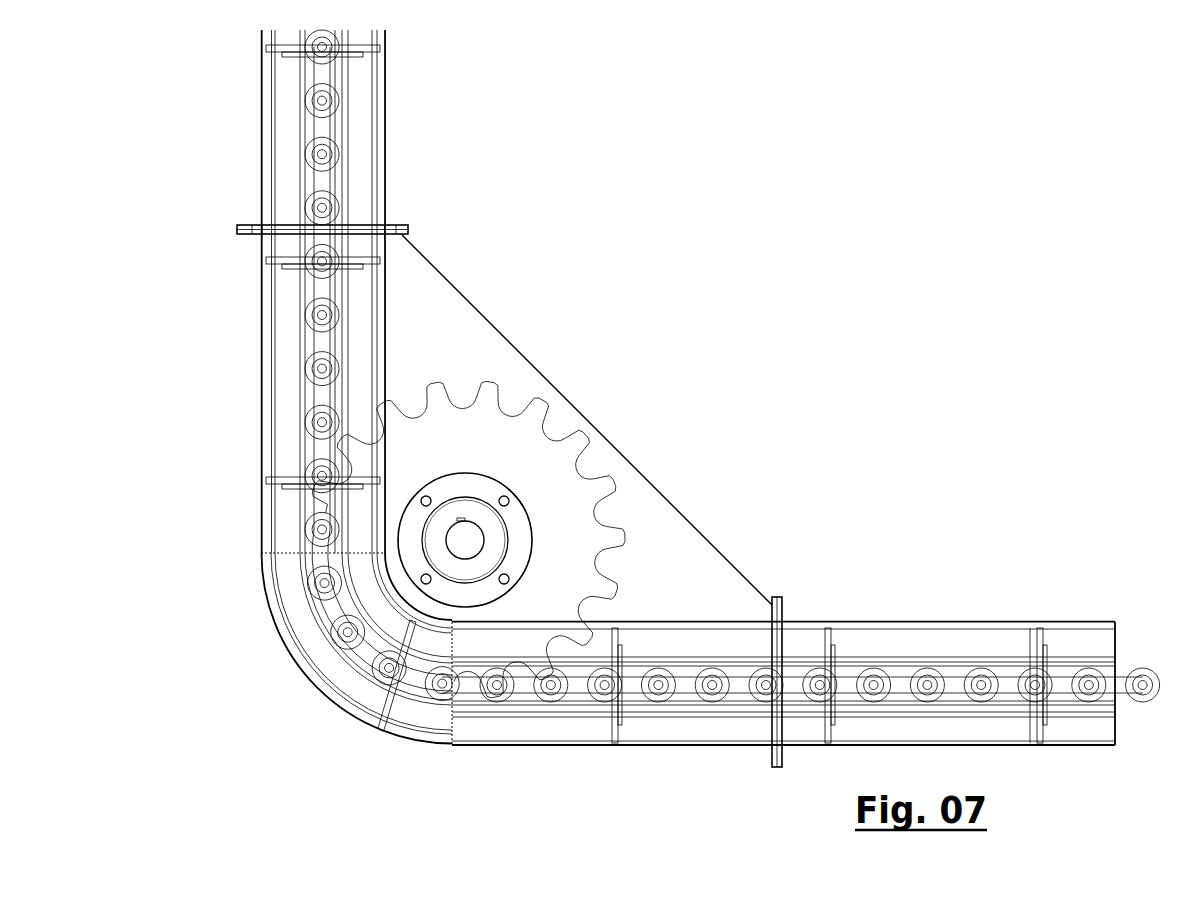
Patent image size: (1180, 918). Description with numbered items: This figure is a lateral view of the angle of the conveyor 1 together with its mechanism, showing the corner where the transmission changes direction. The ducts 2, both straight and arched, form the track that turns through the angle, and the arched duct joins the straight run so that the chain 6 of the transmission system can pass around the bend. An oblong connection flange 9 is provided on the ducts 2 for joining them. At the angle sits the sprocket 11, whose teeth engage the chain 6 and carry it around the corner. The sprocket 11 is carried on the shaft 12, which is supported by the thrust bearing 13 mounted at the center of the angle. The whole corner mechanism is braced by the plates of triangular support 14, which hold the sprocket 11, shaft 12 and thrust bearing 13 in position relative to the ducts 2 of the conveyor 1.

The conveyor 1 is at (786, 356).
The ducts 2 is at (283, 140).
The chain 6 is at (993, 680).
The oblong connection flange 9 is at (250, 238).
The sprocket 11 is at (485, 440).
The shaft 12 is at (472, 547).
The thrust bearing 13 is at (525, 512).
The plates of triangular support 14 is at (428, 332).